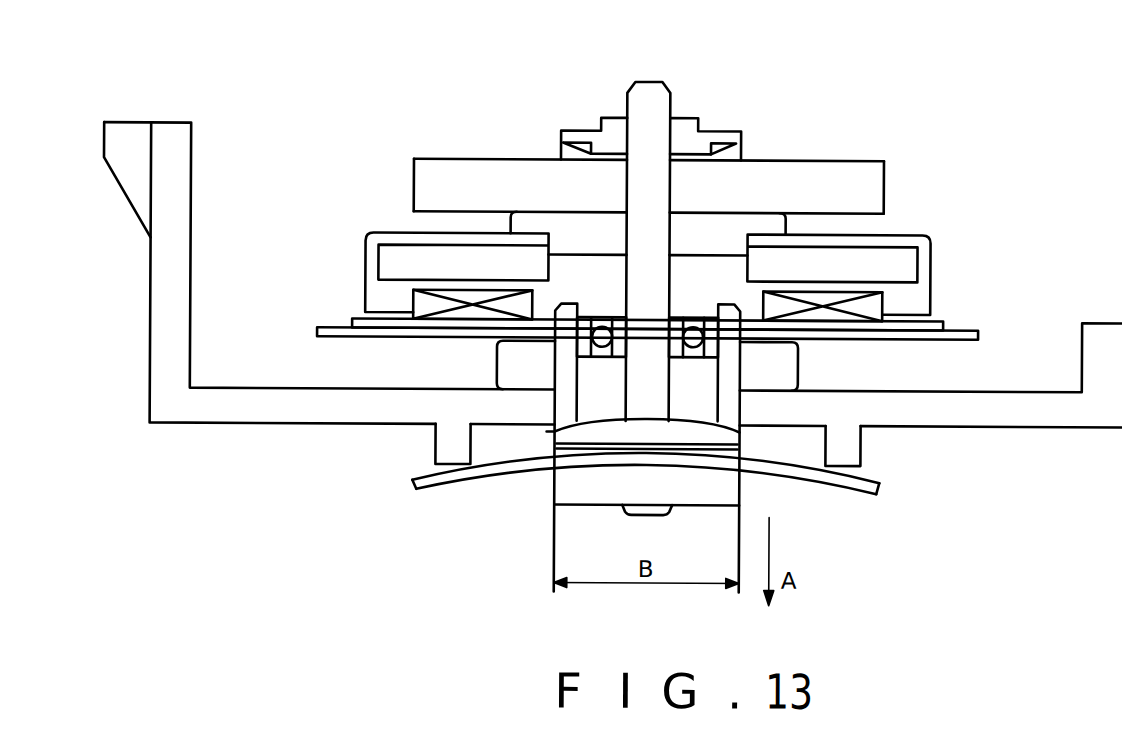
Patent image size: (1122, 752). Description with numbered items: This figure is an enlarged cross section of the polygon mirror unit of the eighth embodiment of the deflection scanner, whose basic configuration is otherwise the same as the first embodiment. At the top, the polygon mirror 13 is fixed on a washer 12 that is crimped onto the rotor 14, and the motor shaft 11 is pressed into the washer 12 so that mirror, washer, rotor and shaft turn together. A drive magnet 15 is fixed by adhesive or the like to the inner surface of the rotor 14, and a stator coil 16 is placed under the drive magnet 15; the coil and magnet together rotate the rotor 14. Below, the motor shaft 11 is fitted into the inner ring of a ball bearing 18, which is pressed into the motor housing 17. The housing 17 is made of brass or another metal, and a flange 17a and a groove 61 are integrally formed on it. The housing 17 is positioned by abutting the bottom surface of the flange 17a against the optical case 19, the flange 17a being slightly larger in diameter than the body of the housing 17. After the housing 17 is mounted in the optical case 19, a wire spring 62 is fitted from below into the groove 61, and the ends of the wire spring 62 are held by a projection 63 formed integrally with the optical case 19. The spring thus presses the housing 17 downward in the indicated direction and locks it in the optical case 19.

The motor shaft 11 is at (657, 113).
The washer 12 is at (777, 227).
The polygon mirror 13 is at (863, 195).
The rotor 14 is at (923, 265).
The drive magnet 15 is at (400, 262).
The stator coil 16 is at (870, 312).
The motor housing 17 is at (497, 357).
The flange 17a is at (787, 375).
The ball bearing 18 is at (600, 327).
The optical case 19 is at (1072, 413).
The groove 61 is at (742, 452).
The wire spring 62 is at (868, 487).
The projection 63 is at (447, 440).